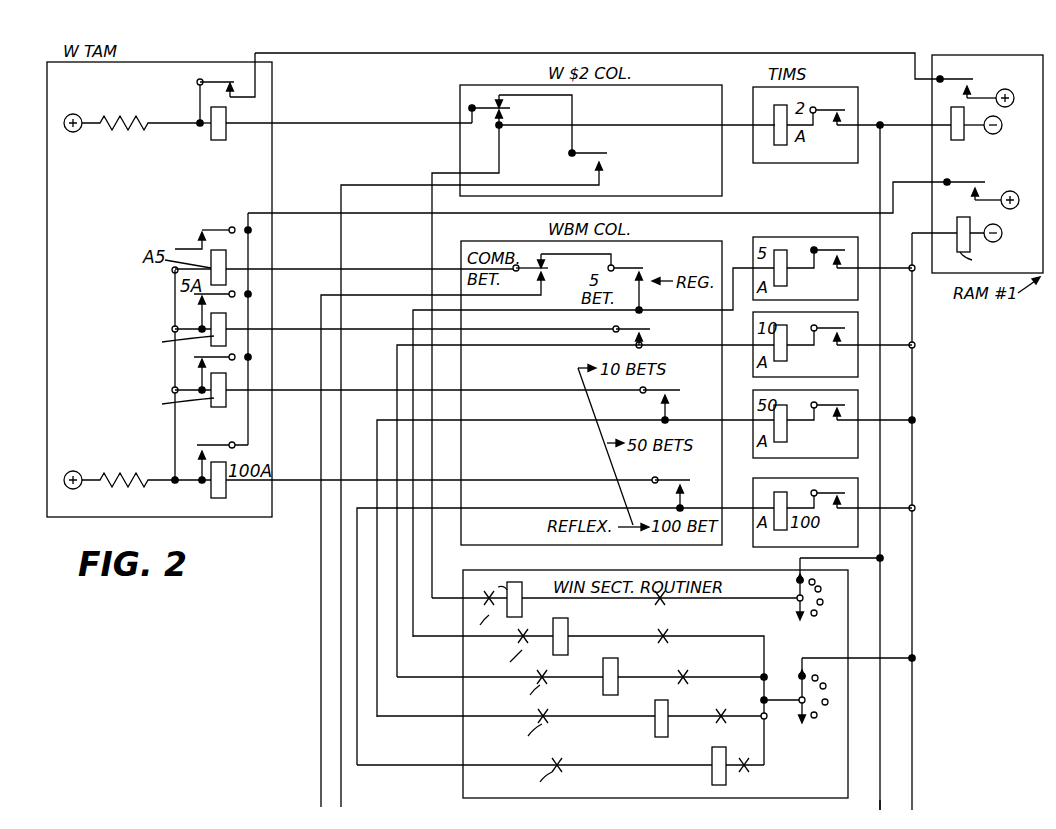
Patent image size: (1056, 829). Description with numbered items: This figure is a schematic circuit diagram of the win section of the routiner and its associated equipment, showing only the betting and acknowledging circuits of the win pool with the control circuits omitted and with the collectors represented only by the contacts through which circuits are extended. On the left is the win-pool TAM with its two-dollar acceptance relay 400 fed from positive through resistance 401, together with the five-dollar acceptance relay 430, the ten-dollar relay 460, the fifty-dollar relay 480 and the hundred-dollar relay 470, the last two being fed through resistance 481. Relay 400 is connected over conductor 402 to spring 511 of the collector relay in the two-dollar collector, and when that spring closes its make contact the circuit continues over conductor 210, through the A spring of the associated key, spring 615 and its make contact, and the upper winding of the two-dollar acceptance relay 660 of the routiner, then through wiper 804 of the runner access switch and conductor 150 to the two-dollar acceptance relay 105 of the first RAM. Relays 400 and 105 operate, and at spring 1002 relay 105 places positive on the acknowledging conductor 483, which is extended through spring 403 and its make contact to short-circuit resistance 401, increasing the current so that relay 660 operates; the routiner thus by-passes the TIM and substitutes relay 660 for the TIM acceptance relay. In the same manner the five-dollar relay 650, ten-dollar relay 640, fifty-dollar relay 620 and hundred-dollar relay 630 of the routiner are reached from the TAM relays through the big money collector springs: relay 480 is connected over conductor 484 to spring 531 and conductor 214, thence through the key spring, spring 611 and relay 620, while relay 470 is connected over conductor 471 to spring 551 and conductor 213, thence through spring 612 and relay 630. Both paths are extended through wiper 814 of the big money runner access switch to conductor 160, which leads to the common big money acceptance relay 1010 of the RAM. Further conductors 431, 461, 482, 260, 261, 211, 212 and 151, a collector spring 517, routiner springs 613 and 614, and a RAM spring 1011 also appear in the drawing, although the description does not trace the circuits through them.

The $2.00 acceptance relay 400 is at (221, 140).
The resistance 401 is at (140, 145).
The conductor 402 is at (358, 120).
The spring 403 is at (207, 76).
The $5.00 acceptance relay 430 is at (227, 228).
The line 431 is at (390, 270).
The $10.00 relay 460 is at (214, 326).
The line 461 is at (387, 330).
The $100.00 acceptance relay 470 is at (212, 450).
The conductor 471 is at (310, 479).
The $50.00 acceptance relay 480 is at (214, 388).
The resistance 481 is at (140, 476).
The line 482 is at (324, 215).
The $2.00 acknowledging conductor 483 is at (370, 55).
The conductor 484 is at (387, 390).
The spring 511 is at (492, 106).
The relay contact 517 is at (582, 160).
The spring 531 is at (672, 388).
The spring 551 is at (668, 478).
The line 260 is at (341, 230).
The line 261 is at (387, 299).
The conductor 210 is at (432, 359).
The line 211 is at (413, 440).
The line 212 is at (397, 672).
The conductor 213 is at (357, 760).
The conductor 214 is at (377, 712).
The conductor 150 is at (880, 468).
The line 151 is at (880, 806).
The conductor 160 is at (912, 397).
The spring 611 is at (726, 720).
The spring 612 is at (746, 772).
The contact 613 is at (688, 680).
The contact 614 is at (666, 642).
The spring 615 is at (663, 604).
The $50.00 acceptance relay 620 is at (668, 706).
The $100.00 acceptance relay 630 is at (719, 754).
The $10.00 acceptance relay 640 is at (618, 668).
The $5.00 acceptance relay 650 is at (568, 627).
The $2.00 acceptance relay 660 is at (477, 608).
The wiper of runner access switch 804 is at (798, 596).
The wiper of big money runner access switch 814 is at (802, 680).
The spring 1002 is at (950, 82).
The $2.00 acceptance relay 105 is at (962, 140).
The relay contact 1011 is at (956, 185).
The big money acceptance relay 1010 is at (970, 212).